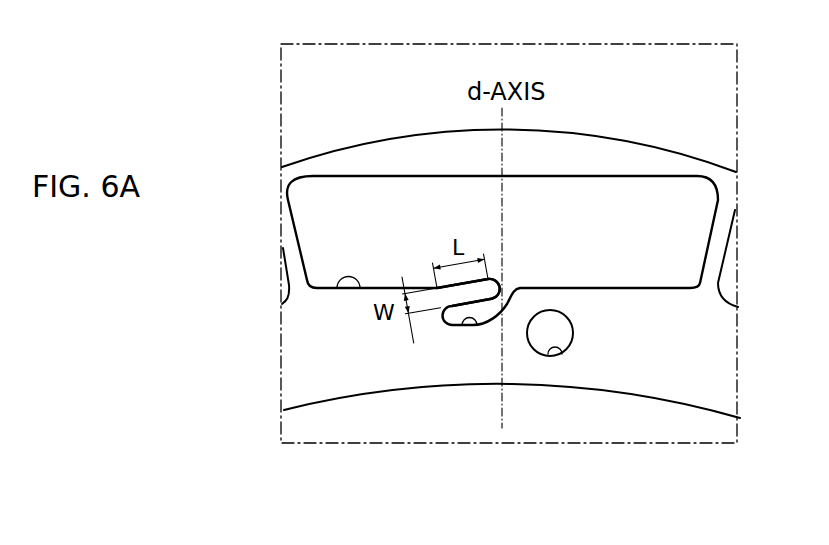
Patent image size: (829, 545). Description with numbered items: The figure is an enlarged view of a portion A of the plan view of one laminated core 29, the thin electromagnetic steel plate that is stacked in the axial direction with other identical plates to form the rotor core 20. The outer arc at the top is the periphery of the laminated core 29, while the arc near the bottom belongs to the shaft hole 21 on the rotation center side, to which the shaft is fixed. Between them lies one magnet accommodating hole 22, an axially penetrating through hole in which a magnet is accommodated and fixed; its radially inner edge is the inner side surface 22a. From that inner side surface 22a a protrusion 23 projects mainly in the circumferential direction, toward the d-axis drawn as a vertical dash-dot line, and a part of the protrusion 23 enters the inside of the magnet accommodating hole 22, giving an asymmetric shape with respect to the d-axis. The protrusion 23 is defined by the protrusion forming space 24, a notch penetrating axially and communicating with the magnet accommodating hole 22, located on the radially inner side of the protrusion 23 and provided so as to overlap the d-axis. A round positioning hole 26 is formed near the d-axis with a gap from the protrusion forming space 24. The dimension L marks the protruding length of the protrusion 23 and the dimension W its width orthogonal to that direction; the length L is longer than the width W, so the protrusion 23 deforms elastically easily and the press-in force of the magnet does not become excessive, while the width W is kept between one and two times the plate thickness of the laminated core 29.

The portion A is at (281, 66).
The rotor core 20 is at (509, 130).
The laminated core 29 is at (669, 142).
The shaft hole 21 is at (712, 414).
The magnet accommodating hole 22 is at (502, 250).
The inner side surface 22a is at (337, 290).
The protrusion 23 is at (502, 290).
The protrusion forming space 24 is at (462, 326).
The positioning hole 26 is at (563, 356).